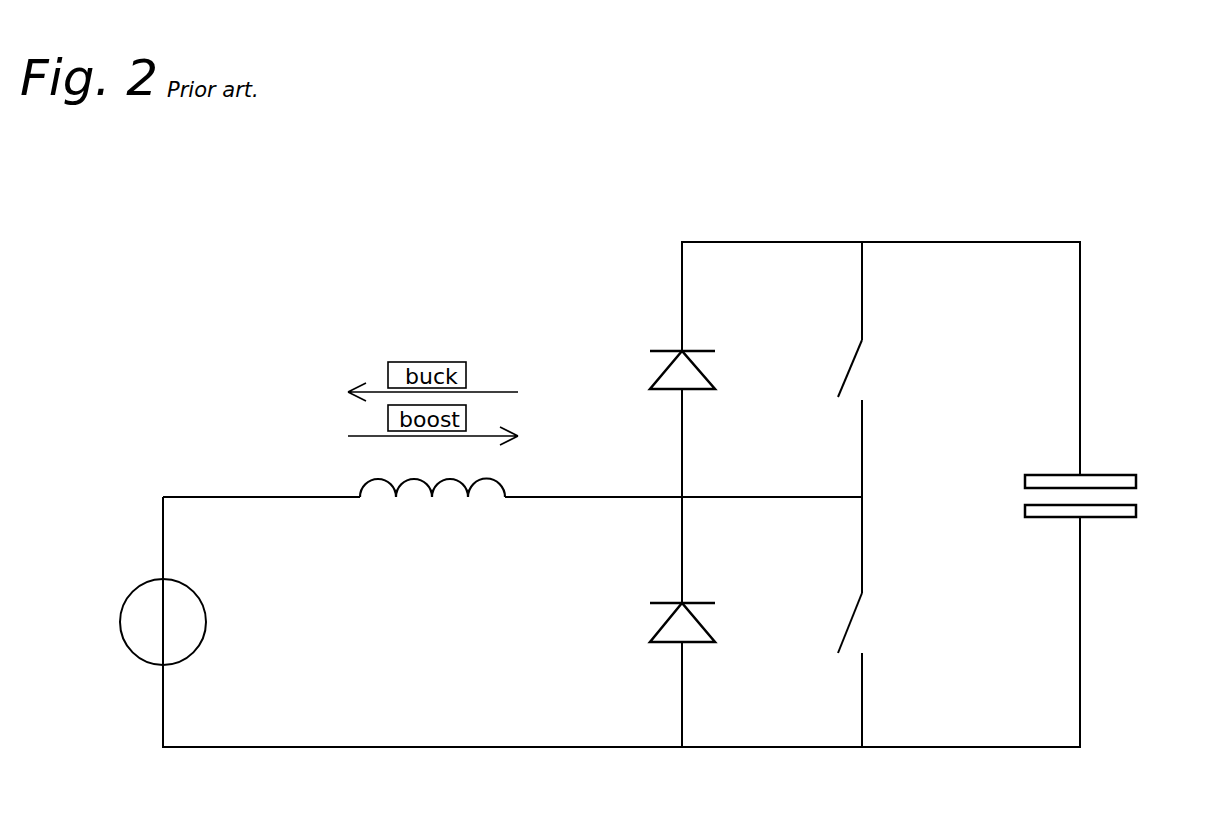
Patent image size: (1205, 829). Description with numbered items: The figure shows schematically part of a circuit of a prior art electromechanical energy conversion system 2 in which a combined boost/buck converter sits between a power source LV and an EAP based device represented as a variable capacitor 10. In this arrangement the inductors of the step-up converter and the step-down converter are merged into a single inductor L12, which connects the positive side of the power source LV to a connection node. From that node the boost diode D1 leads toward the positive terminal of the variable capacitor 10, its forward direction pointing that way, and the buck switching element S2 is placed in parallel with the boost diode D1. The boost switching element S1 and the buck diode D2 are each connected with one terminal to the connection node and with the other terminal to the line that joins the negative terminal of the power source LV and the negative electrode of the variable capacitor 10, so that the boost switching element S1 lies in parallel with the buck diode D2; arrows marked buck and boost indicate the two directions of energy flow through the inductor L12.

The electromechanical energy conversion system 2 is at (603, 324).
The boost diode D1 is at (694, 378).
The buck diode D2 is at (694, 630).
The boost switching element S1 is at (850, 628).
The buck switching element S2 is at (852, 370).
The inductor L12 is at (447, 495).
The power source LV is at (132, 610).
The variable capacitor 10 is at (1115, 480).